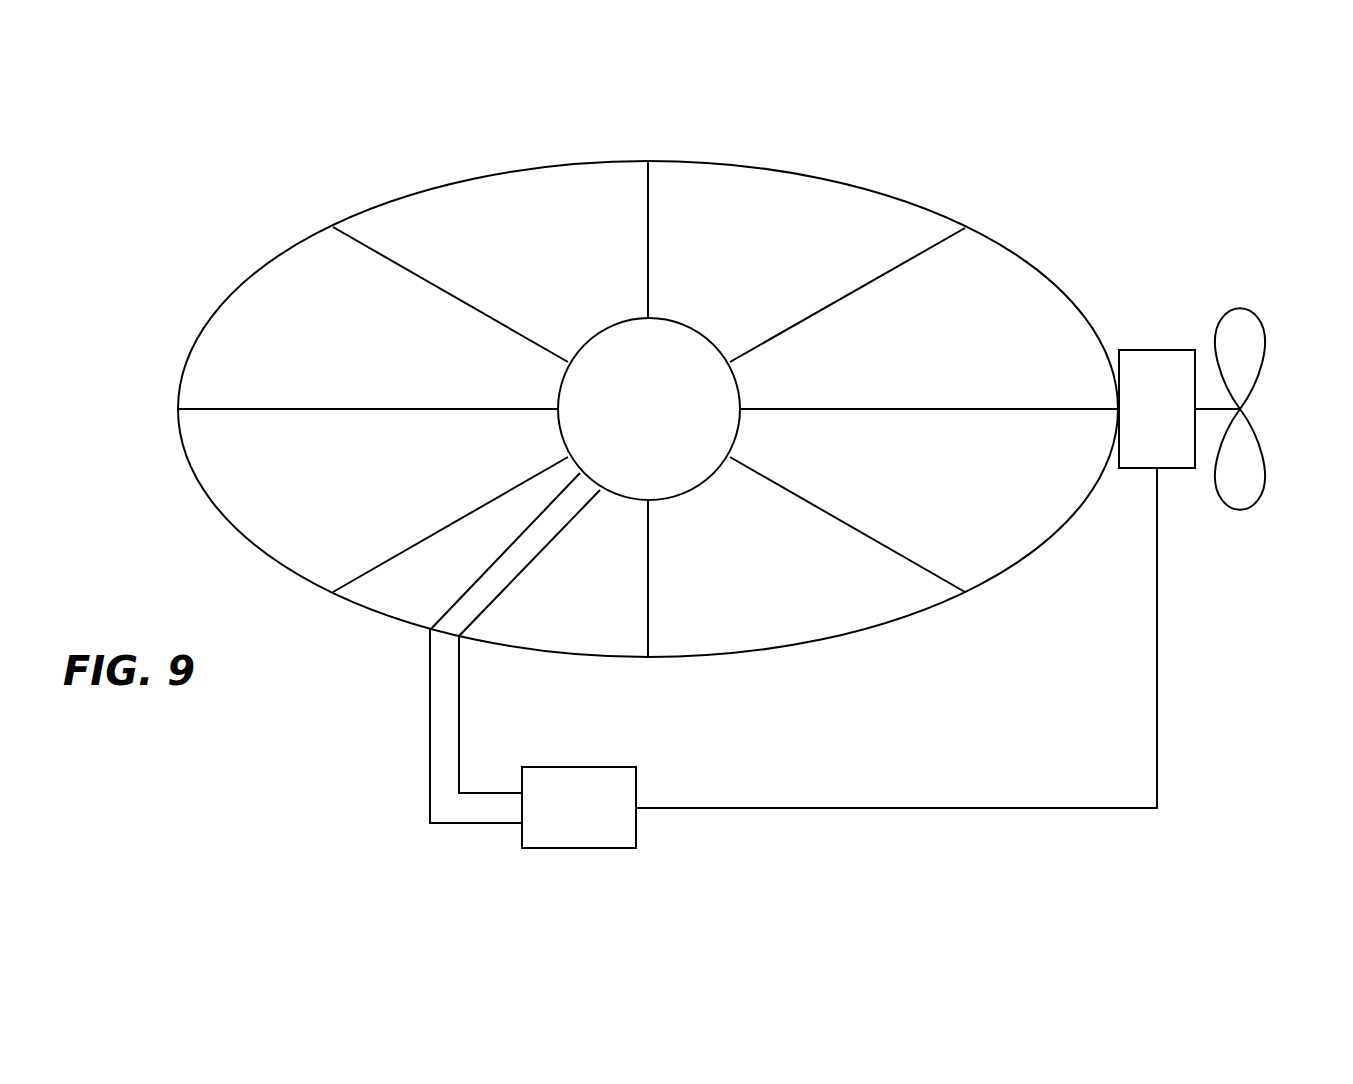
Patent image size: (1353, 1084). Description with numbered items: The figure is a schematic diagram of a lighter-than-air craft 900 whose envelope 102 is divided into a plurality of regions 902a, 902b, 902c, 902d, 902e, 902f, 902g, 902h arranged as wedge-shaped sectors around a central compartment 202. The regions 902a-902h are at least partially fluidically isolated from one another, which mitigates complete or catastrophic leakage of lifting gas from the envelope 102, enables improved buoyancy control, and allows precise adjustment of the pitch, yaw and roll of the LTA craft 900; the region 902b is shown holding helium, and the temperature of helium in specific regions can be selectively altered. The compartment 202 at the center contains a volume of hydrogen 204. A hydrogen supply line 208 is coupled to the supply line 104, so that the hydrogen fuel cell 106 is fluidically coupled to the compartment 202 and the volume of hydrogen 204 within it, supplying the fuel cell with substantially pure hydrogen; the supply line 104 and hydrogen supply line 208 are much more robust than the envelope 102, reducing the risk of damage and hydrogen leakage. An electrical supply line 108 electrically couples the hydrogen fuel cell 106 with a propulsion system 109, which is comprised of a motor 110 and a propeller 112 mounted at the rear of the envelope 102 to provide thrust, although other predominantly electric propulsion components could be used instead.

The LTA craft 900 is at (1122, 153).
The envelope 102 is at (358, 212).
The supply line 104 is at (425, 729).
The hydrogen fuel cell 106 is at (575, 848).
The electrical supply line 108 is at (962, 808).
The propulsion system 109 is at (1279, 430).
The motor 110 is at (1157, 350).
The propeller 112 is at (1278, 307).
The compartment 202 is at (557, 433).
The volume of hydrogen 204 is at (689, 421).
The hydrogen supply line 208 is at (503, 592).
The region 902a is at (800, 259).
The region 902b is at (1014, 349).
The region 902c is at (976, 490).
The region 902d is at (790, 577).
The region 902e is at (629, 578).
The region 902f is at (400, 490).
The region 902g is at (406, 345).
The region 902h is at (583, 259).